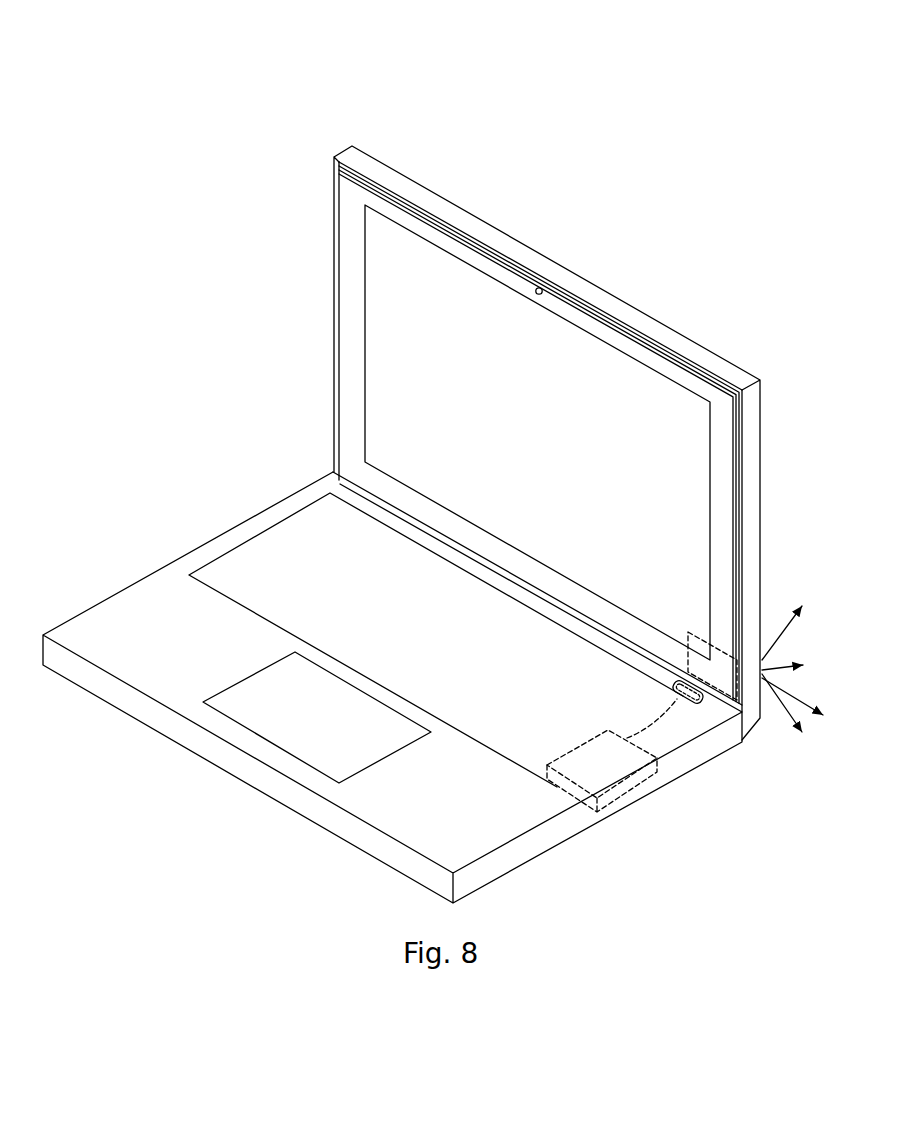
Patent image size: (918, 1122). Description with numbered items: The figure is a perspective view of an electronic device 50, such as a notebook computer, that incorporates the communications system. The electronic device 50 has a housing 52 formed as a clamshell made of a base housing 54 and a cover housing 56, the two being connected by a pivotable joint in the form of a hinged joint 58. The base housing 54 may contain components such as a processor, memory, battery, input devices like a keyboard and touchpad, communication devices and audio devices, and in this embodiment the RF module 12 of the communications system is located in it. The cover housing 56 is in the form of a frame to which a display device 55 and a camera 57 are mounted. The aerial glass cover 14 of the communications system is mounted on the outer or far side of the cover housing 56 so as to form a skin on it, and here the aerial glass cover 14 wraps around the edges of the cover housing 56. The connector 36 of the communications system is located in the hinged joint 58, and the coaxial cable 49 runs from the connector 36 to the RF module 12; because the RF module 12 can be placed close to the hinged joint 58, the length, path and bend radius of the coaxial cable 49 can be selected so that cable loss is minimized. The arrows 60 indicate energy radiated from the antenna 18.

The electronic device 50 is at (410, 142).
The housing 52 is at (334, 427).
The aerial glass cover 14 is at (528, 250).
The cover housing 56 is at (602, 310).
The camera 57 is at (542, 287).
The display device 55 is at (645, 385).
The hinged joint 58 is at (515, 587).
The base housing 54 is at (145, 592).
The antenna 18 is at (697, 632).
The connector 36 is at (701, 689).
The coaxial cable 49 is at (655, 717).
The RF module 12 is at (617, 784).
The arrows 60 is at (799, 669).